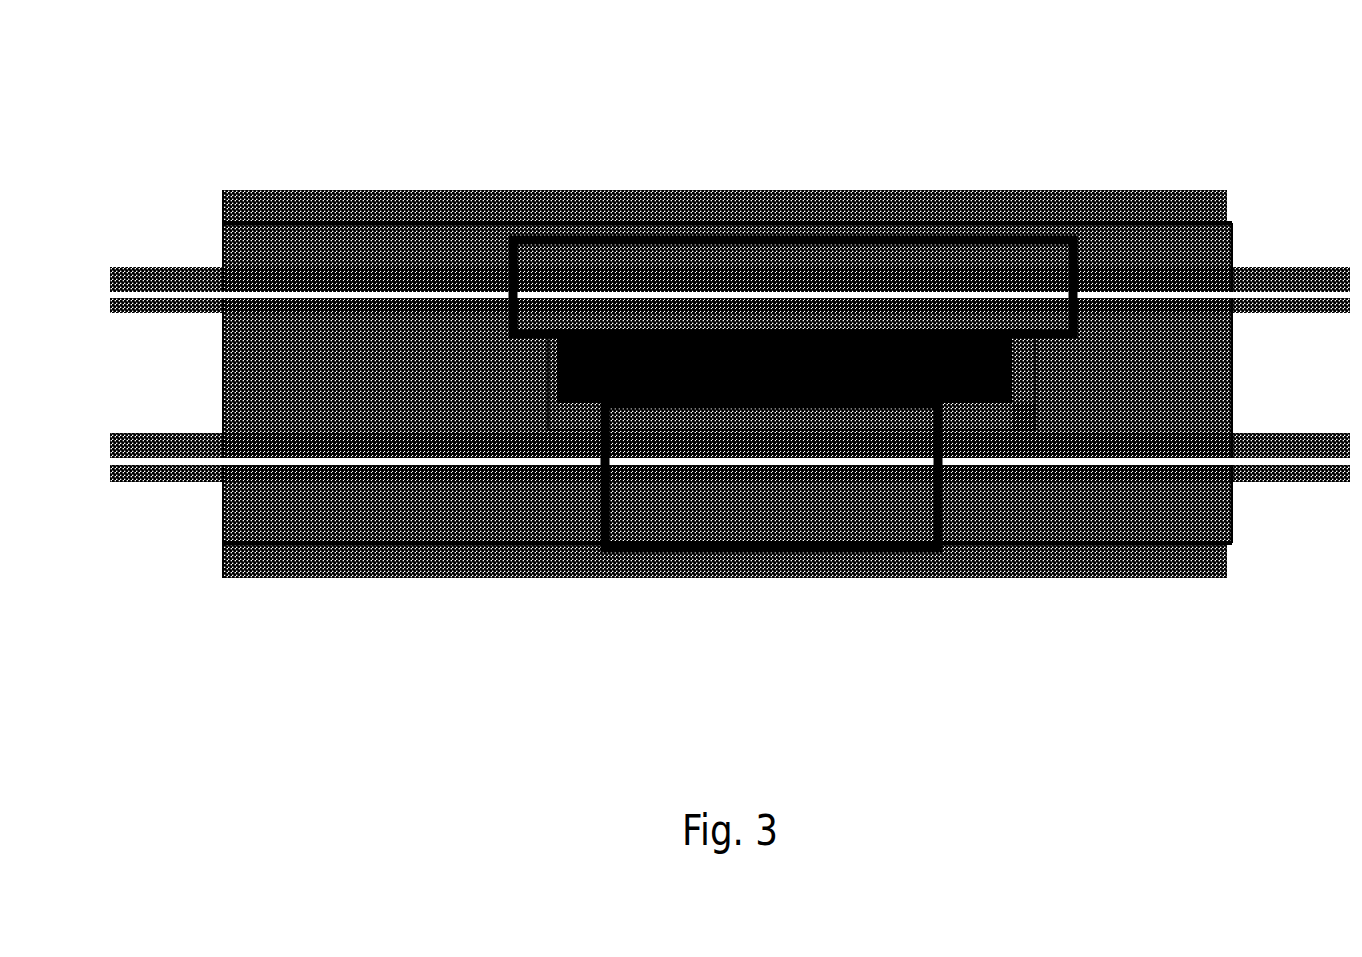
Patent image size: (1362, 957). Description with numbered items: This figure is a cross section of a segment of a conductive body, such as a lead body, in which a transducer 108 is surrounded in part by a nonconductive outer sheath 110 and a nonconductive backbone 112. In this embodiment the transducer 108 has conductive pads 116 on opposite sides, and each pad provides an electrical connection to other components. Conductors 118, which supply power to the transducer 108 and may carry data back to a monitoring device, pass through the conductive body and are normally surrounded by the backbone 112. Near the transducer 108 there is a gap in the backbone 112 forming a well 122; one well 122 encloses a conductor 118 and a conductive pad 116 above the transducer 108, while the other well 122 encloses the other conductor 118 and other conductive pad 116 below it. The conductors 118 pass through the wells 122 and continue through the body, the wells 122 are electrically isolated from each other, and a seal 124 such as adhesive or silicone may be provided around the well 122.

The transducer 108 is at (583, 410).
The outer sheath 110 is at (1077, 188).
The backbone 112 is at (1081, 511).
The conductive pad 116 is at (695, 313).
The conductors 118 is at (1317, 266).
The well 122 is at (856, 245).
The seal 124 is at (967, 432).